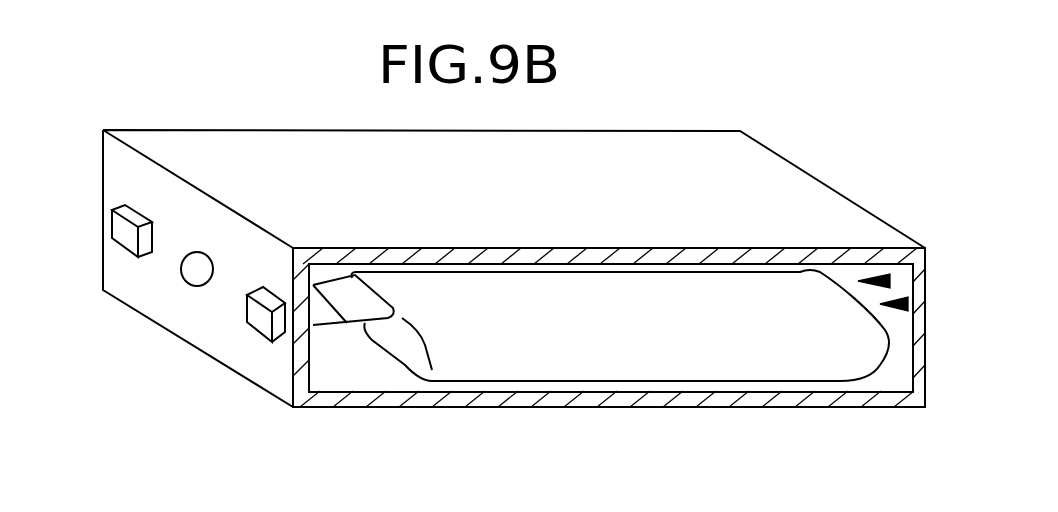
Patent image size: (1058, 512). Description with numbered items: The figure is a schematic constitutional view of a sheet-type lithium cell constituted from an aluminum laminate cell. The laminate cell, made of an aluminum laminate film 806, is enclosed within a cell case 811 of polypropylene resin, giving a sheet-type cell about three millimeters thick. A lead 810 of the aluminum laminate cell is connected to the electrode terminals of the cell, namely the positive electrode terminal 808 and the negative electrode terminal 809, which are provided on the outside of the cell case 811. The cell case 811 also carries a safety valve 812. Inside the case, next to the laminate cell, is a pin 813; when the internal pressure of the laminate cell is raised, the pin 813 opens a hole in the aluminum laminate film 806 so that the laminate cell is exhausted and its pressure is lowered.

The aluminum laminate film 806 is at (665, 352).
The positive electrode terminal 808 is at (122, 233).
The negative electrode terminal 809 is at (260, 322).
The lead 810 is at (352, 307).
The cell case 811 is at (878, 258).
The safety valve 812 is at (191, 276).
The pin 813 is at (897, 314).